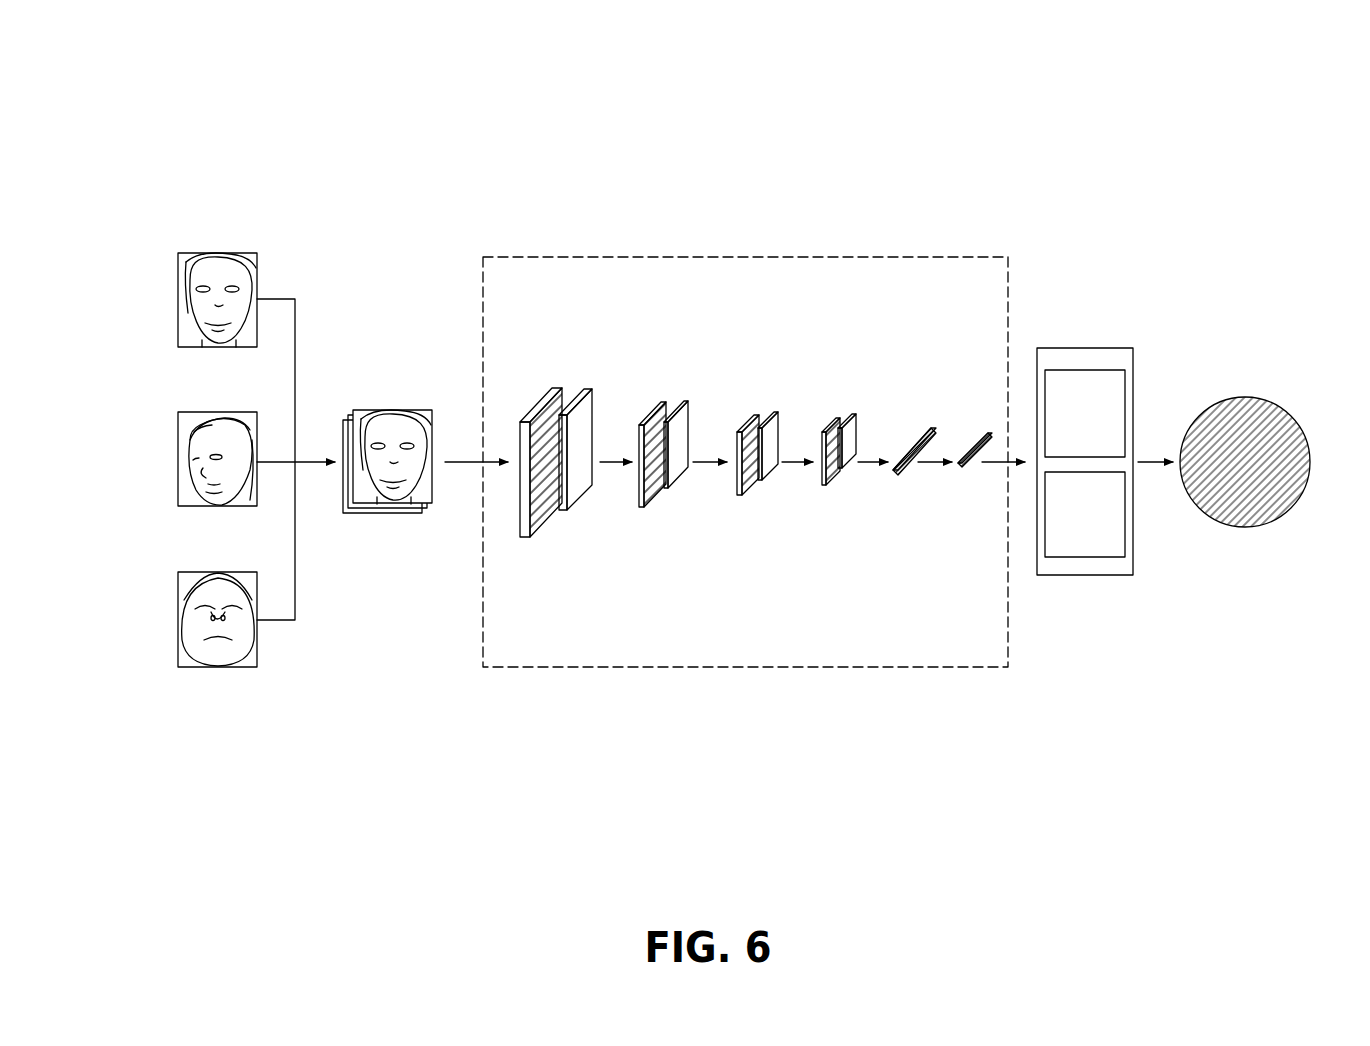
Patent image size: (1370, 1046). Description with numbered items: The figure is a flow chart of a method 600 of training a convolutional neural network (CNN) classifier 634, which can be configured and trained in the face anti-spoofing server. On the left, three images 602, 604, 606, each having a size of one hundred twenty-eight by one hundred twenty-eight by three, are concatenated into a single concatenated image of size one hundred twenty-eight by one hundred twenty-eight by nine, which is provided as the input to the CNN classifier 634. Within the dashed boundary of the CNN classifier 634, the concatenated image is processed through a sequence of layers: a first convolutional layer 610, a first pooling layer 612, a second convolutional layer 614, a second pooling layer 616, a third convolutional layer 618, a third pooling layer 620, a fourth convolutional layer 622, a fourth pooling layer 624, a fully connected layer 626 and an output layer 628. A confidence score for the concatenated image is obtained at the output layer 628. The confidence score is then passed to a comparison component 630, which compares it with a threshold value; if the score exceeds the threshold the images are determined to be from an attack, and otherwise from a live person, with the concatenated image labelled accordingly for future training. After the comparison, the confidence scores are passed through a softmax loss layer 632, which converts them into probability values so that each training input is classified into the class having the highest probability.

The method of training a convolutional neural network classifier 600 is at (719, 391).
The image 602 is at (183, 300).
The image 604 is at (183, 460).
The image 606 is at (183, 626).
The first convolutional layer 610 is at (392, 410).
The first pooling layer 612 is at (577, 498).
The second convolutional layer 614 is at (657, 410).
The second pooling layer 616 is at (683, 488).
The third convolutional layer 618 is at (745, 424).
The third pooling layer 620 is at (770, 478).
The fourth convolutional layer 622 is at (835, 425).
The fourth pooling layer 624 is at (848, 470).
The fully connected layer 626 is at (918, 446).
The output layer 628 is at (961, 470).
The comparison component 630 is at (1083, 350).
The softmax loss layer 632 is at (1245, 398).
The convolutional neural network classifier 634 is at (551, 668).